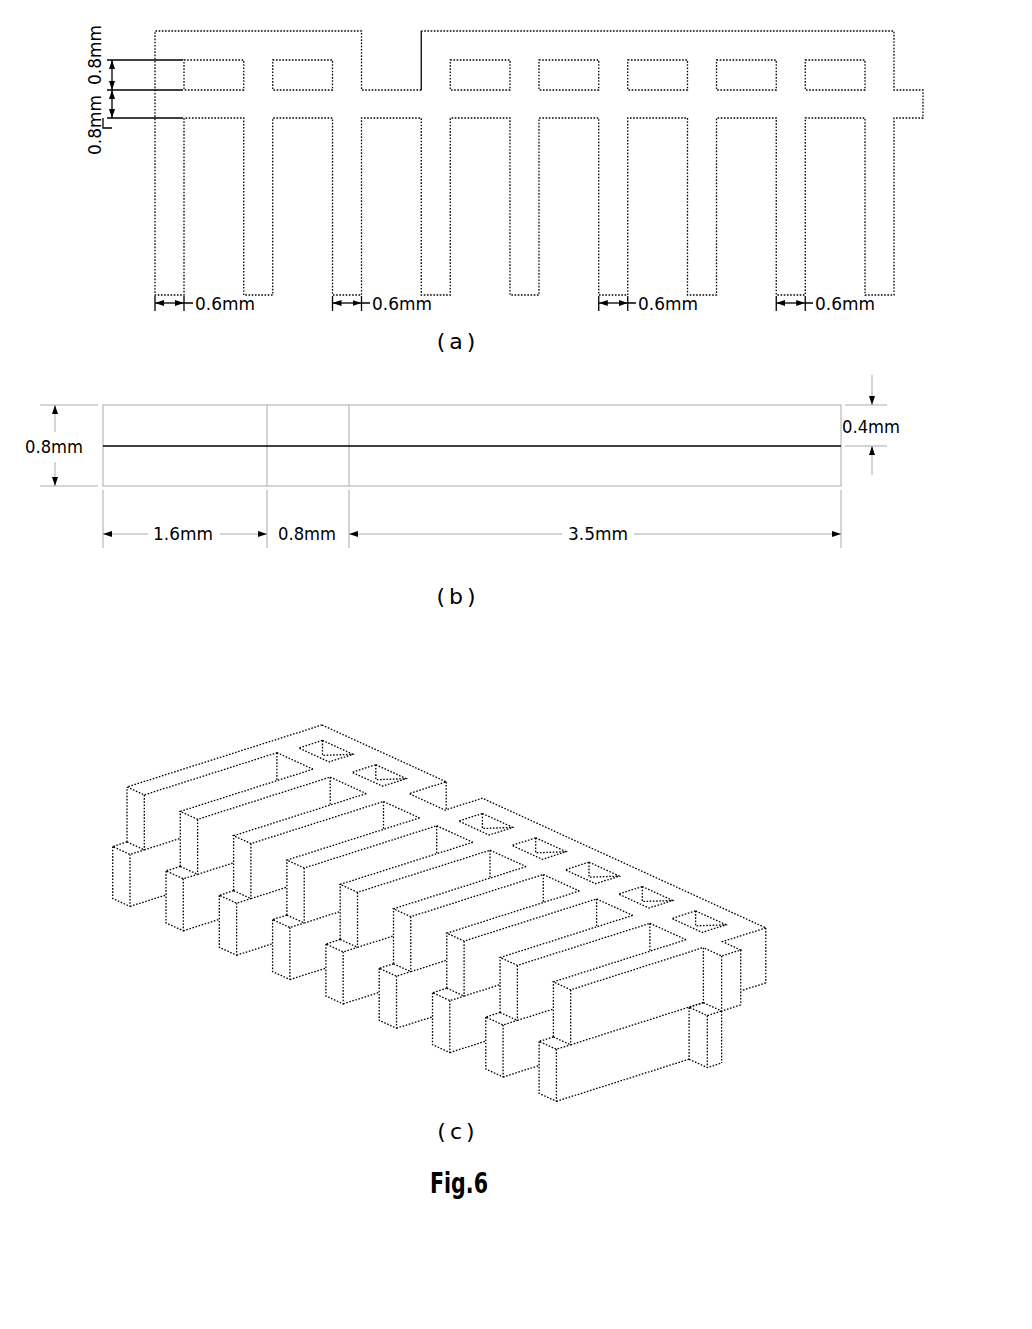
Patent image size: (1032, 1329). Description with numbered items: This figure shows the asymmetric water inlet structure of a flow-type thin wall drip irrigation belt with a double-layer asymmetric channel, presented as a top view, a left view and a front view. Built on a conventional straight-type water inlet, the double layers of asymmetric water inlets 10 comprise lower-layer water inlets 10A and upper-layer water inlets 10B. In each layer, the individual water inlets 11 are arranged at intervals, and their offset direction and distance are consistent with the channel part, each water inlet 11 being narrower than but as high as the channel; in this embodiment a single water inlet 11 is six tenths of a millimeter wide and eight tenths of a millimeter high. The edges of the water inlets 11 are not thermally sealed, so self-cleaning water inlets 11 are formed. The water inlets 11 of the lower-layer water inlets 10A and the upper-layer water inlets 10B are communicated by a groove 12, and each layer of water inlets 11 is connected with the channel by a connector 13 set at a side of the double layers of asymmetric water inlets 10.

The double layers of asymmetric water inlets 10 is at (723, 901).
The lower-layer water inlets 10A is at (443, 1035).
The upper-layer water inlets 10B is at (551, 843).
The water inlets 11 is at (140, 817).
The groove 12 is at (485, 825).
The connector 13 is at (753, 1040).